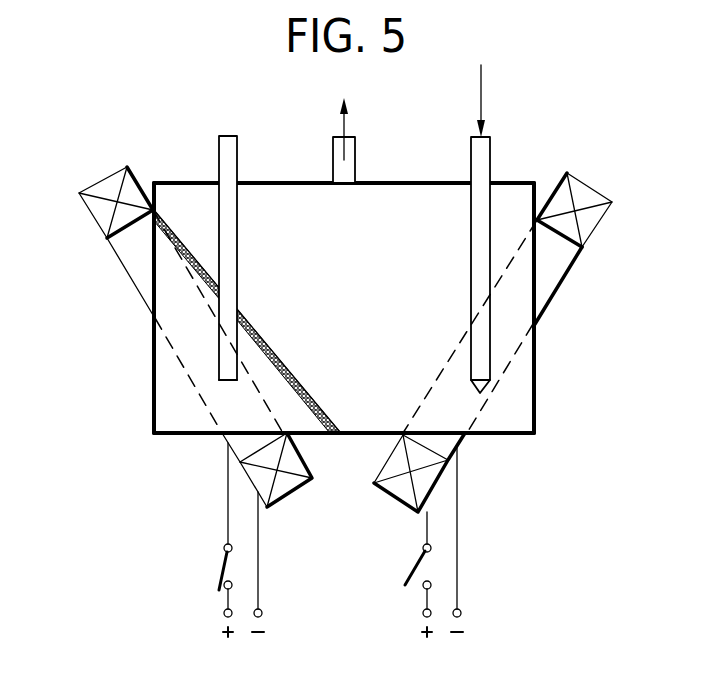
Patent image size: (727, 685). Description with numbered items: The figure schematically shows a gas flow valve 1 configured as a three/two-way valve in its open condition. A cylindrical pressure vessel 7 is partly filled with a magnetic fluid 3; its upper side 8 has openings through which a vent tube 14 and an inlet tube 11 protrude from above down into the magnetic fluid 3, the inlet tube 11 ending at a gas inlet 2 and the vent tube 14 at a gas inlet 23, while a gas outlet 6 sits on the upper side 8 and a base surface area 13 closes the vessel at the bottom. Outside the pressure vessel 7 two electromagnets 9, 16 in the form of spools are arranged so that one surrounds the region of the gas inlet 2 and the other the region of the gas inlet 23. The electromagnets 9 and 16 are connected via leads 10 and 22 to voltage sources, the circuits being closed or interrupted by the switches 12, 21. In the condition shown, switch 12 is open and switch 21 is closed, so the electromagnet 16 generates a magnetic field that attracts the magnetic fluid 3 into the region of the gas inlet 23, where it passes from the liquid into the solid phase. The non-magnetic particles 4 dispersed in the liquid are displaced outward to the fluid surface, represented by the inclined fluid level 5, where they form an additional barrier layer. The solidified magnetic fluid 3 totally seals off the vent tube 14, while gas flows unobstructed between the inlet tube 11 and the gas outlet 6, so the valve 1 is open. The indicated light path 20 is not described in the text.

The gas flow valve 1 is at (320, 279).
The gas inlet 2 is at (487, 400).
The magnetic fluid 3 is at (320, 291).
The non-magnetic particles 4 is at (303, 390).
The inclined fluid level 5 is at (260, 333).
The gas outlet 6 is at (357, 160).
The pressure vessel 7 is at (536, 360).
The upper side 8 is at (266, 181).
The electromagnet 9 is at (588, 218).
The lead 10 is at (458, 502).
The inlet tube 11 is at (482, 170).
The switch 12 is at (412, 563).
The base surface area 13 is at (170, 434).
The vent tube 14 is at (226, 152).
The electromagnet 16 is at (102, 210).
The light beam path 20 is at (152, 333).
The switch 21 is at (222, 566).
The lead 22 is at (228, 497).
The gas inlet 23 is at (218, 380).